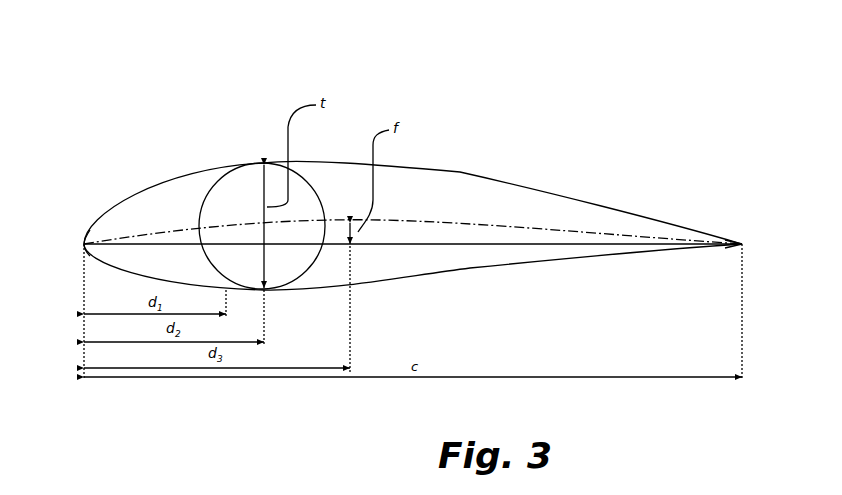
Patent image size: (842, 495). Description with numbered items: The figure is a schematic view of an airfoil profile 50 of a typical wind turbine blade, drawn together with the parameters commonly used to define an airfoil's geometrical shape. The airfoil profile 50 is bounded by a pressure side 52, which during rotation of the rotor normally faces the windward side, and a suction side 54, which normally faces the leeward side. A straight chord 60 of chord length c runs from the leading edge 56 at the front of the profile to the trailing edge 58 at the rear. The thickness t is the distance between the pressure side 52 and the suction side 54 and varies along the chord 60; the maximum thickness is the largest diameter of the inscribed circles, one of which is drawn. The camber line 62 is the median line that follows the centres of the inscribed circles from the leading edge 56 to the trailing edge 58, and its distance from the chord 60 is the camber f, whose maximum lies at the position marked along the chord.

The airfoil profile 50 is at (399, 183).
The pressure side 52 is at (542, 267).
The suction side 54 is at (495, 173).
The leading edge 56 is at (83, 244).
The trailing edge 58 is at (742, 242).
The chord 60 is at (573, 243).
The camber line 62 is at (403, 221).